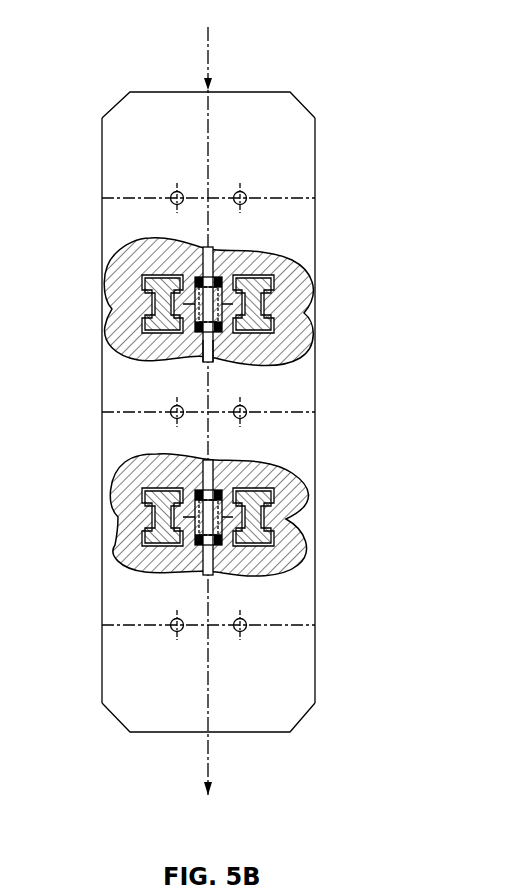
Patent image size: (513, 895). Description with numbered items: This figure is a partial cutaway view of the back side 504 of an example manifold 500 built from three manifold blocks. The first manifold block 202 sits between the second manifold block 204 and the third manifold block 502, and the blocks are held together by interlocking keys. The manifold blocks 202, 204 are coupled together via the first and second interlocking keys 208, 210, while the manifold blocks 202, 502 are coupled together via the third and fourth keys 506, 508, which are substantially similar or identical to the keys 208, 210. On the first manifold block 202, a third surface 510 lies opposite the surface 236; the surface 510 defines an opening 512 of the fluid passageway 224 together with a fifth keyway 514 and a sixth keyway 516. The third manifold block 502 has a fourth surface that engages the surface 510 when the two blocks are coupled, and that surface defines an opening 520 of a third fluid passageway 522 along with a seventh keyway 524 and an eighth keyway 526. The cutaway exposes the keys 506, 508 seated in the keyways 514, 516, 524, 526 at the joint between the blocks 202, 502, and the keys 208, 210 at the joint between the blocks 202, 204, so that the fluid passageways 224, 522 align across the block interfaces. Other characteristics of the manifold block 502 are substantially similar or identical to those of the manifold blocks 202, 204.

The manifold 500 is at (327, 48).
The manifold block 502 is at (150, 92).
The back side 504 is at (297, 175).
The manifold block 202 is at (102, 420).
The manifold block 204 is at (162, 732).
The opening 520 is at (141, 264).
The keyway 526 is at (286, 262).
The keyway 514 is at (131, 328).
The keyway 516 is at (289, 327).
The key 506 is at (197, 316).
The key 508 is at (257, 315).
The surface 510 is at (160, 312).
The fluid passageway 522 is at (214, 252).
The keyway 524 is at (197, 278).
The opening 512 is at (198, 330).
The fluid passageway 224 is at (205, 358).
The surface 236 is at (293, 500).
The interlocking key 208 is at (158, 523).
The interlocking key 210 is at (258, 528).